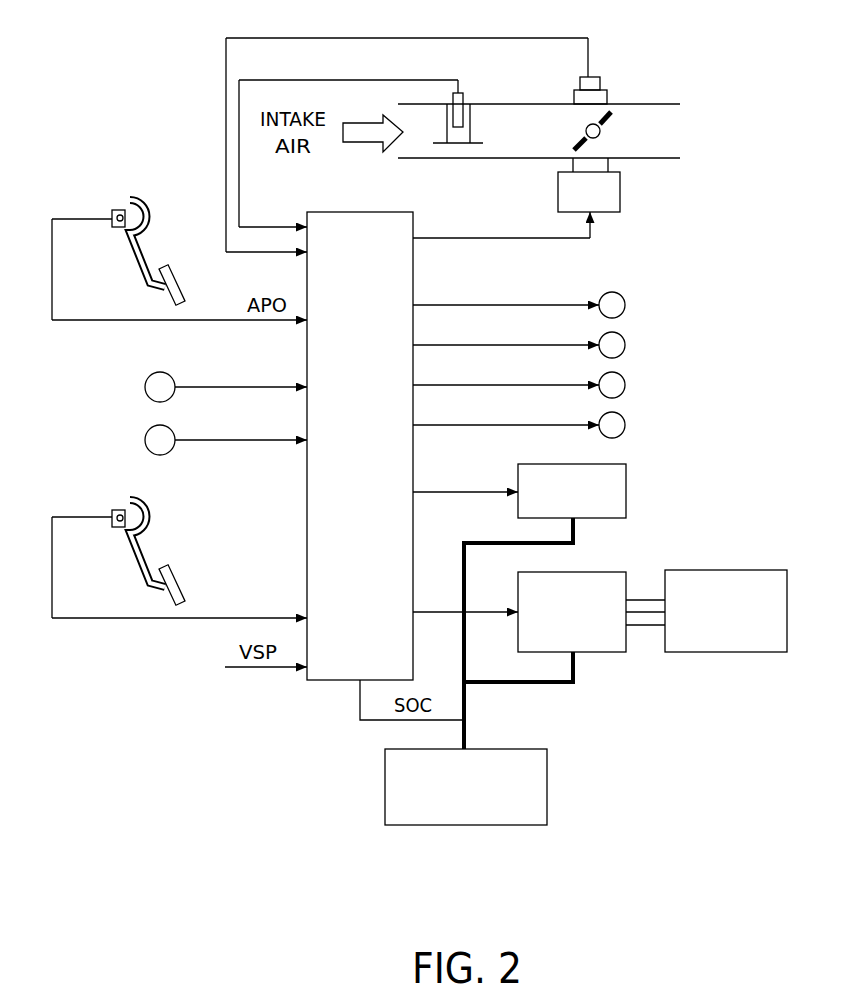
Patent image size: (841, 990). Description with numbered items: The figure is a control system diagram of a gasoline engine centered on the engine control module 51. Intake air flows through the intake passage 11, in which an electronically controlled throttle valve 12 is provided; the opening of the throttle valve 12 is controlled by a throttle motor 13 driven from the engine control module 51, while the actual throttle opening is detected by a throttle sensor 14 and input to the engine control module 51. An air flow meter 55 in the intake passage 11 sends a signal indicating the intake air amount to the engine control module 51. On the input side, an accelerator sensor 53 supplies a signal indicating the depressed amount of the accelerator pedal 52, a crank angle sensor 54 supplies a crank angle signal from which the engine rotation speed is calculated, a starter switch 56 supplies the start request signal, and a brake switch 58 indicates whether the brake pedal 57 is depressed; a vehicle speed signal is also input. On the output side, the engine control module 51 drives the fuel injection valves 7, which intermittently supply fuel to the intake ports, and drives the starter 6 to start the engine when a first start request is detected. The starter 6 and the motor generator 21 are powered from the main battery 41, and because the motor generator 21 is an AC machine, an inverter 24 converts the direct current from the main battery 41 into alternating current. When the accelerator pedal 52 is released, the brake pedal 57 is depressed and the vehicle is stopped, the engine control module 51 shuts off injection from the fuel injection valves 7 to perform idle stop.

The starter 6 is at (612, 478).
The fuel injection valve 7 is at (623, 301).
The intake passage 11 is at (660, 104).
The throttle valve 12 is at (572, 141).
The throttle motor 13 is at (620, 192).
The throttle sensor 14 is at (594, 84).
The motor generator 21 is at (762, 570).
The inverter 24 is at (612, 571).
The main battery 41 is at (520, 757).
The engine control module 51 is at (380, 228).
The accelerator pedal 52 is at (180, 270).
The accelerator sensor 53 is at (119, 209).
The crank angle sensor 54 is at (150, 380).
The air flow meter 55 is at (462, 96).
The starter switch 56 is at (150, 433).
The brake pedal 57 is at (180, 570).
The brake switch 58 is at (119, 509).